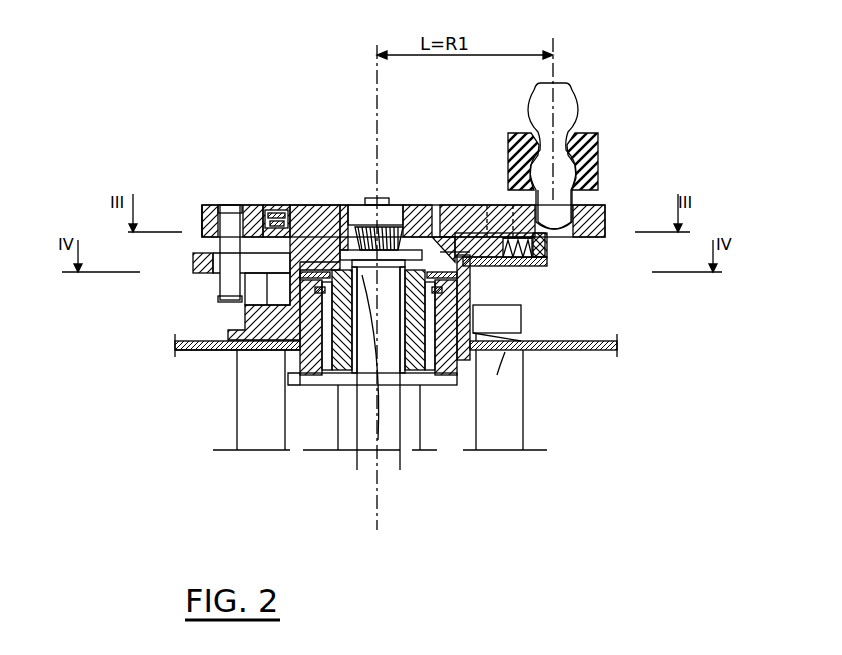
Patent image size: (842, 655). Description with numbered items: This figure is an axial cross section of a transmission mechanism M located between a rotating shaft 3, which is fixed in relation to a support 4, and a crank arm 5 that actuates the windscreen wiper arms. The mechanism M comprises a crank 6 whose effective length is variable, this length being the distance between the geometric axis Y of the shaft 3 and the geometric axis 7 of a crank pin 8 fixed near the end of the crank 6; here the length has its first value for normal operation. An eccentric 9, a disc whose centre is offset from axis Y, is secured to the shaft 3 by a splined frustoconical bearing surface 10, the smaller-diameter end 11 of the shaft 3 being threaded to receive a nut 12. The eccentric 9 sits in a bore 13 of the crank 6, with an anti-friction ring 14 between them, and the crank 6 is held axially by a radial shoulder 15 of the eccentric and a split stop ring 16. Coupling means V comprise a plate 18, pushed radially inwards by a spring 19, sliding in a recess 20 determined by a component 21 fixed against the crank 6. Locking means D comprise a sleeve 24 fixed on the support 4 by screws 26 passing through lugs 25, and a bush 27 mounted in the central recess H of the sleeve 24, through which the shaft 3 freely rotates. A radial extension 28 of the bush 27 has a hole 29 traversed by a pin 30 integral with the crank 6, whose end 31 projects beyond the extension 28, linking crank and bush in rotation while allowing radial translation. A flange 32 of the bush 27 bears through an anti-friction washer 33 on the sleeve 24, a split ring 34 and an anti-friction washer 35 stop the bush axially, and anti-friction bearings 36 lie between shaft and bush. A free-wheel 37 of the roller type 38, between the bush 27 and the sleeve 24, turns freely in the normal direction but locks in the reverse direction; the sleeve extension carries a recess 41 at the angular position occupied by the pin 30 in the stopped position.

The rotating shaft 3 is at (387, 405).
The support 4 is at (596, 338).
The crank arm 5 is at (602, 147).
The crank 6 is at (593, 210).
The geometric axis of crank pin 7 is at (555, 63).
The crank pin 8 is at (563, 102).
The eccentric 9 is at (318, 228).
The splined frustoconical bearing surface 10 is at (390, 197).
The end of the shaft 11 is at (372, 197).
The nut 12 is at (368, 208).
The bore 13 is at (298, 228).
The anti-friction ring 14 is at (420, 203).
The radial shoulder 15 is at (255, 218).
The split stop ring 16 is at (278, 212).
The plate 18 is at (484, 268).
The spring 19 is at (553, 243).
The recess 20 is at (512, 268).
The component 21 is at (552, 262).
The sleeve 24 is at (480, 368).
The lugs 25 is at (522, 350).
The screws 26 is at (524, 354).
The bush 27 is at (335, 378).
The radial extension 28 is at (227, 283).
The hole 29 is at (254, 297).
The pin 30 is at (207, 207).
The end of the pin 31 is at (222, 292).
The flange 32 is at (523, 374).
The anti-friction washer 33 is at (425, 382).
The split ring 34 is at (331, 225).
The anti-friction washer 35 is at (466, 203).
The anti-friction bearings 36 is at (362, 372).
The free-wheel 37 is at (290, 376).
The rollers 38 is at (308, 373).
The recess 41 is at (215, 350).
The locking means D is at (435, 392).
The central recess H is at (270, 350).
The transmission mechanism M is at (198, 156).
The coupling means V is at (526, 275).
The geometric axis of the shaft Y is at (377, 90).